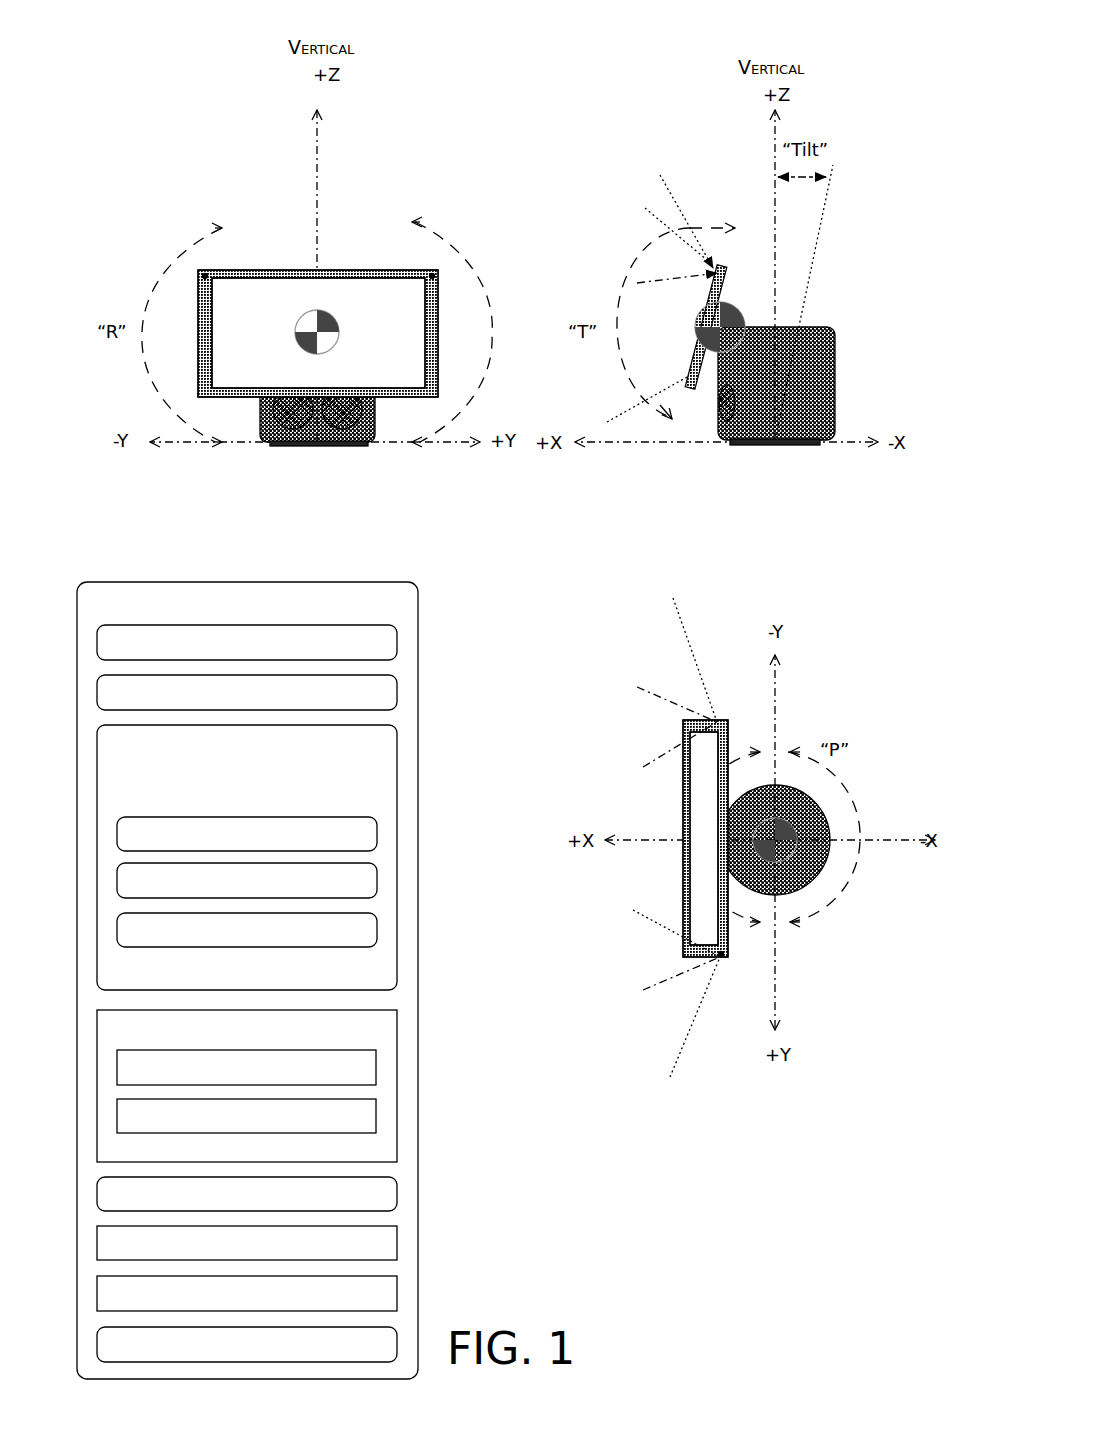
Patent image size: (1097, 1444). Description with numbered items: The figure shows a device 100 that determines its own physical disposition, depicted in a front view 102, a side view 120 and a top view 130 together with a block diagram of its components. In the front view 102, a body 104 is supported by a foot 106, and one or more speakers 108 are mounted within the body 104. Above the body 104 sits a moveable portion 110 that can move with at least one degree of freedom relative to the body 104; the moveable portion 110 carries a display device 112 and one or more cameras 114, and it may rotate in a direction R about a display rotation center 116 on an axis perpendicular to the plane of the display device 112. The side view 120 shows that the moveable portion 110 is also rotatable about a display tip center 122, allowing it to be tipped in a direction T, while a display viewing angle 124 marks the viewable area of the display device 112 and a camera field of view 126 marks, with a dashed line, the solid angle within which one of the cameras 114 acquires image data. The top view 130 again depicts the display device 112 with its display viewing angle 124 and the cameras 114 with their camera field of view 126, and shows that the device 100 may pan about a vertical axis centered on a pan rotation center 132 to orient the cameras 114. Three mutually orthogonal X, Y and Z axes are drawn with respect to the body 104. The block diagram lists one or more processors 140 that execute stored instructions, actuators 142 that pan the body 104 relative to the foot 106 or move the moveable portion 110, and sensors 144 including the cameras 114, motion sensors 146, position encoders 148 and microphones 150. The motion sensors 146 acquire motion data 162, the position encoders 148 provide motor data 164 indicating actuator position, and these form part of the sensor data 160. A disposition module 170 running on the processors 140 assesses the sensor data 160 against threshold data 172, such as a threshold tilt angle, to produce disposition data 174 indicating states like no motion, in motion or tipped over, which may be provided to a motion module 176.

The device 100 is at (880, 13).
The front view 102 is at (242, 98).
The body 104 is at (362, 428).
The foot 106 is at (340, 446).
The speakers 108 is at (290, 417).
The moveable portion 110 is at (307, 266).
The display device 112 is at (707, 833).
The cameras 114 is at (720, 954).
The display rotation center 116 is at (317, 354).
The side view 120 is at (700, 105).
The display tip center 122 is at (721, 329).
The display viewing angle 124 is at (598, 444).
The camera field of view 126 is at (578, 625).
The top view 130 is at (633, 697).
The pan rotation center 132 is at (772, 846).
The processors 140 is at (247, 642).
The actuators 142 is at (247, 692).
The sensors 144 is at (247, 857).
The motion sensors 146 is at (247, 834).
The position encoders 148 is at (247, 880).
The microphones 150 is at (247, 930).
The sensor data 160 is at (247, 1086).
The motion data 162 is at (246, 1067).
The motor data 164 is at (246, 1116).
The disposition module 170 is at (247, 1194).
The threshold data 172 is at (247, 1243).
The disposition data 174 is at (247, 1293).
The motion module 176 is at (247, 1344).